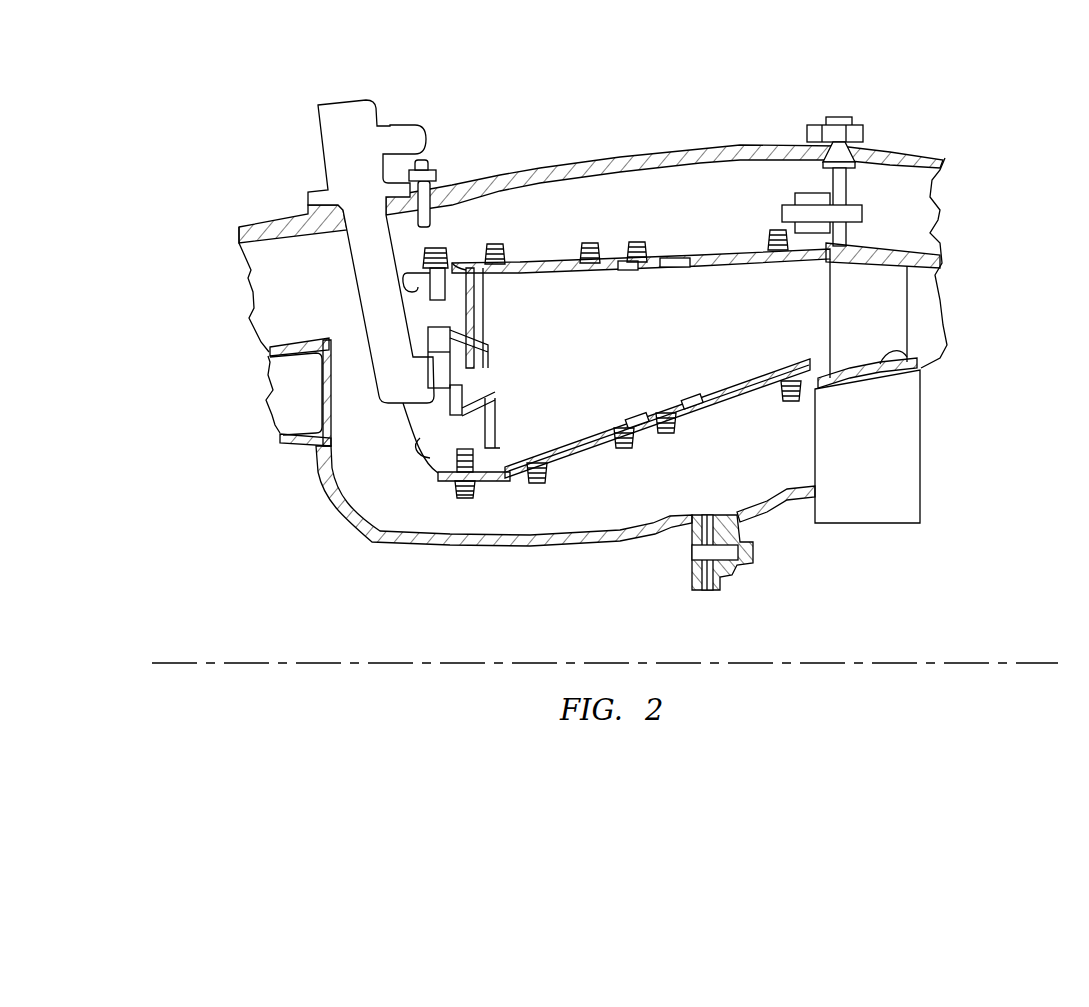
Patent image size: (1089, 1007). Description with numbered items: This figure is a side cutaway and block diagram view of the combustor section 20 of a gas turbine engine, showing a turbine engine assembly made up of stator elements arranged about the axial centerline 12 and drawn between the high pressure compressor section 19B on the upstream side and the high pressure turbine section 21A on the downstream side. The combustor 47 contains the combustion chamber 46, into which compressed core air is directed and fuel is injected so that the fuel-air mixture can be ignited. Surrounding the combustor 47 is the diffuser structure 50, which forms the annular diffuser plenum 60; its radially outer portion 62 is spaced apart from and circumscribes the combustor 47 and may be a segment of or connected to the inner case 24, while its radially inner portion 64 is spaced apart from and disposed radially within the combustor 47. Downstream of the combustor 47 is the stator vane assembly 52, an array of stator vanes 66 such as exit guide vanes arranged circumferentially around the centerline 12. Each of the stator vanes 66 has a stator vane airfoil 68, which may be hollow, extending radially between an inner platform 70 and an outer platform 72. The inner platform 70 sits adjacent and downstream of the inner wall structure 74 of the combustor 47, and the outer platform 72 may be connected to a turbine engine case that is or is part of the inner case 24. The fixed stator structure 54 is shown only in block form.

The axial centerline 12 is at (963, 660).
The combustor section 20 is at (668, 102).
The inner case 24 is at (593, 242).
The radially outer portion 62 is at (582, 158).
The annular diffuser plenum 60 is at (300, 292).
The combustor 47 is at (707, 254).
The combustion chamber 46 is at (620, 346).
The inner wall structure 74 is at (736, 400).
The outer platform 72 is at (893, 244).
The stator vane airfoil 68 is at (854, 330).
The fixed stator structure 54 is at (858, 454).
The stator vane assembly 52 is at (929, 360).
The stator vanes 66 is at (912, 332).
The inner platform 70 is at (898, 360).
The diffuser structure 50 is at (565, 533).
The radially inner portion 64 is at (455, 546).
The high pressure compressor section 19B is at (305, 393).
The high pressure turbine section 21A is at (885, 298).